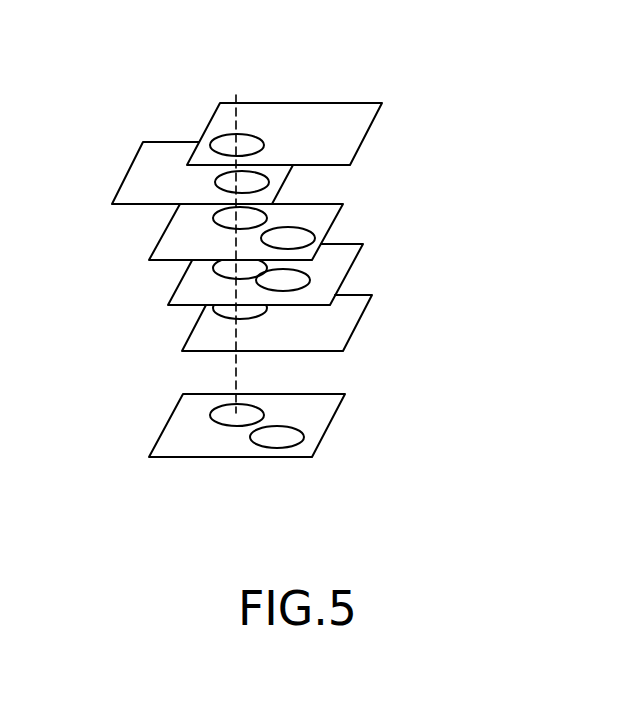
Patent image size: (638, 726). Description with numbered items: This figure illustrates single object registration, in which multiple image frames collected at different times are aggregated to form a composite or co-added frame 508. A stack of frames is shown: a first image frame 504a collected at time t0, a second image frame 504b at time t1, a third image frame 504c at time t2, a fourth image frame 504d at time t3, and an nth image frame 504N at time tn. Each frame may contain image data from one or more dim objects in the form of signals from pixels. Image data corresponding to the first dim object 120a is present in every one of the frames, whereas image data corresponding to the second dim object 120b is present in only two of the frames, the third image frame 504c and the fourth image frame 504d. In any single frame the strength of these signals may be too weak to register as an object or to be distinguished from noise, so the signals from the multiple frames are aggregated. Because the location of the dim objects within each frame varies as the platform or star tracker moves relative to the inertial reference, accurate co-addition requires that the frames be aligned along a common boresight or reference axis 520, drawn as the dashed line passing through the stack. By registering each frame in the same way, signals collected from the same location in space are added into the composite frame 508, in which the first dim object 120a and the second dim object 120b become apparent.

The first dim object 120a is at (224, 138).
The second dim object 120b is at (288, 233).
The first image frame 504a is at (370, 128).
The second image frame 504b is at (127, 173).
The third image frame 504c is at (337, 212).
The fourth image frame 504d is at (345, 258).
The nth image frame 504N is at (350, 343).
The composite frame 508 is at (323, 430).
The common reference axis 520 is at (236, 110).
The time t0 is at (367, 103).
The time t1 is at (142, 141).
The time t2 is at (158, 245).
The time t3 is at (167, 302).
The time tn is at (192, 332).